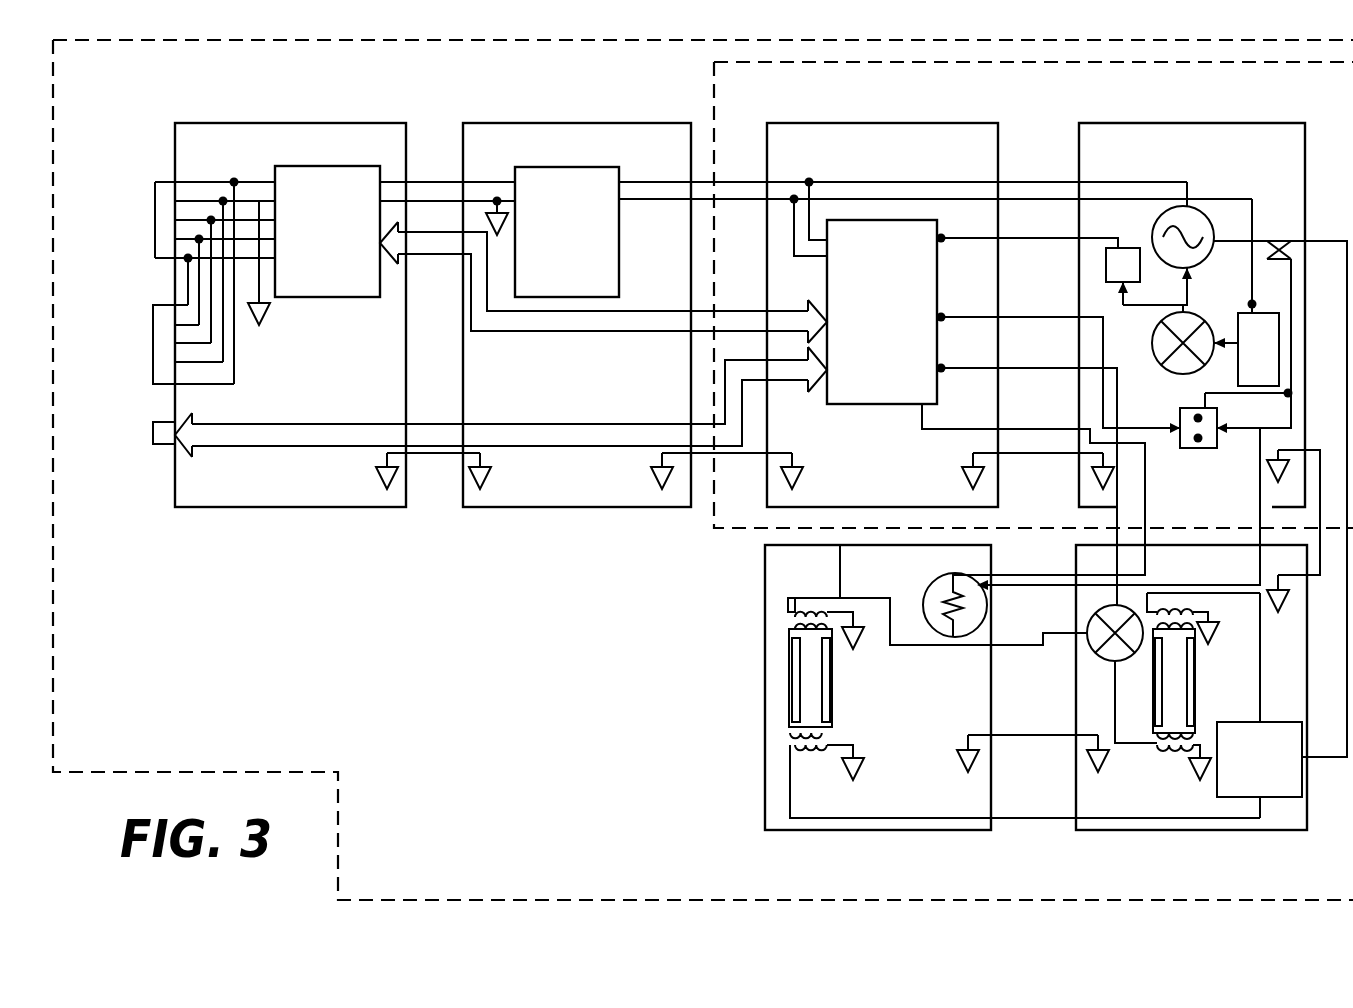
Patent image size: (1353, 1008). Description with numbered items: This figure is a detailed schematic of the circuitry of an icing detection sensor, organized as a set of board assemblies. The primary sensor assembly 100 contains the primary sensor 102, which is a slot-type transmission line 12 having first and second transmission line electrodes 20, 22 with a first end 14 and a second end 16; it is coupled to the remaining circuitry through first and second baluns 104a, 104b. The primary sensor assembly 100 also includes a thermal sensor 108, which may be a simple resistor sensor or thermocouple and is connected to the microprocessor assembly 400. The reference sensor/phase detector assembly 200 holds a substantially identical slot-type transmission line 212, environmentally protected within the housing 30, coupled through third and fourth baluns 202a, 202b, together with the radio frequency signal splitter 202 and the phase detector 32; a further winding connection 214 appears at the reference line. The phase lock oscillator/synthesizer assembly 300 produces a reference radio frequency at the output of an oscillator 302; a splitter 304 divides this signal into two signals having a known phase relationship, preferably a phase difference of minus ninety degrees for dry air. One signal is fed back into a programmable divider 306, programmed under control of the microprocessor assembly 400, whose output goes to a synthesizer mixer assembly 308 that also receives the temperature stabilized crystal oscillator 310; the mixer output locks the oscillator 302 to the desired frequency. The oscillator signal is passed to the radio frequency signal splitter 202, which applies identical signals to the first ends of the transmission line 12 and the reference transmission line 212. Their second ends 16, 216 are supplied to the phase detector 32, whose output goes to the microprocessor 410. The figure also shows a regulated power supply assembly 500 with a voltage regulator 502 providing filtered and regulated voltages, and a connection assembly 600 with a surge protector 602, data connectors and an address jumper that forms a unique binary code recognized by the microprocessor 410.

The slot-type transmission line 12 is at (786, 684).
The first end of the slot-type transmission line 14 is at (790, 733).
The second end of the slot-type transmission line 16 is at (786, 603).
The first transmission line electrode 20 is at (789, 697).
The second transmission line electrode 22 is at (833, 723).
The housing 30 is at (713, 528).
The phase detector 32 is at (1087, 642).
The primary sensor assembly 100 is at (765, 783).
The primary sensor 102 is at (950, 716).
The first balun 104a is at (816, 748).
The second balun 104b is at (795, 604).
The thermal sensor 108 is at (982, 618).
The reference sensor/phase detector assembly 200 is at (1076, 832).
The radio frequency signal splitter 202 is at (1302, 768).
The third balun 202a is at (1157, 752).
The fourth balun 202b is at (1172, 606).
The reference sensor slot-type transmission line 212 is at (1232, 756).
The reference sensor upper ground lead 214 is at (1195, 620).
The second end of the reference slot-type transmission line 216 is at (1157, 734).
The phase lock oscillator/synthesizer assembly 300 is at (1245, 122).
The oscillator 302 is at (1214, 228).
The splitter 304 is at (1282, 233).
The programmable divider 306 is at (1208, 448).
The synthesizer mixer assembly 308 is at (1152, 349).
The temperature stabilized crystal oscillator 310 is at (1240, 312).
The microprocessor assembly 400 is at (933, 122).
The microprocessor 410 is at (863, 406).
The regulated power supply assembly 500 is at (640, 122).
The voltage regulator 502 is at (580, 282).
The connection assembly 600 is at (368, 122).
The surge protector 602 is at (338, 271).